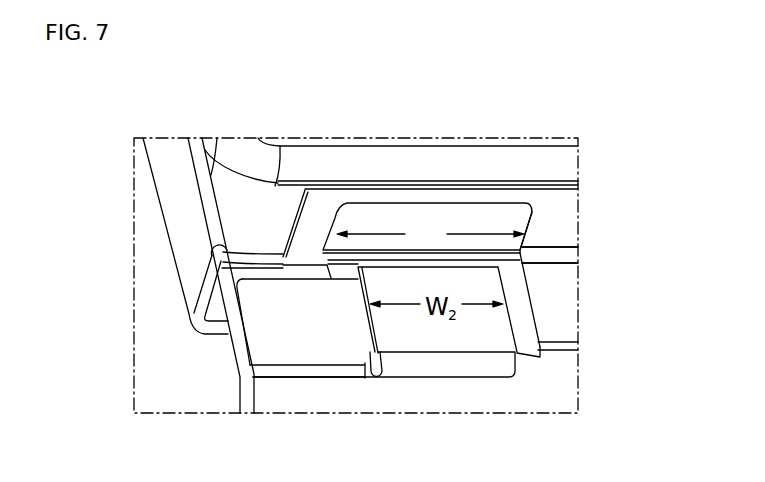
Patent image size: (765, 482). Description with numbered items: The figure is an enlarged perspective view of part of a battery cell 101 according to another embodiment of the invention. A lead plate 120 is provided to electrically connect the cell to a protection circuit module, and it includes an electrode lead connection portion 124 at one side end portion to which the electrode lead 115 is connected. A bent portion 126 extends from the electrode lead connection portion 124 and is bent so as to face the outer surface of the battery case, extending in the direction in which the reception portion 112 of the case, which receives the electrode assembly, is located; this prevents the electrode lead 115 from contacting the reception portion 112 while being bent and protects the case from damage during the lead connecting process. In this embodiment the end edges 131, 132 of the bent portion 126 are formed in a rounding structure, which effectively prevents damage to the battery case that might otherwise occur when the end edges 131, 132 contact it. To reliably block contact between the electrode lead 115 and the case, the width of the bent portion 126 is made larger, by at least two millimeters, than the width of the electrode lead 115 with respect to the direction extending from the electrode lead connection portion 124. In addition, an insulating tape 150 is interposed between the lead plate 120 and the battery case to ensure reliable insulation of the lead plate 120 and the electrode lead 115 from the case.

The battery cell 101 is at (176, 110).
The reception portion 112 is at (428, 163).
The electrode lead 115 is at (440, 367).
The lead plate 120 is at (229, 403).
The electrode lead connection portion 124 is at (528, 344).
The bent portion 126 is at (410, 213).
The end edge 131 is at (357, 202).
The end edge 132 is at (510, 202).
The insulating tape 150 is at (562, 305).